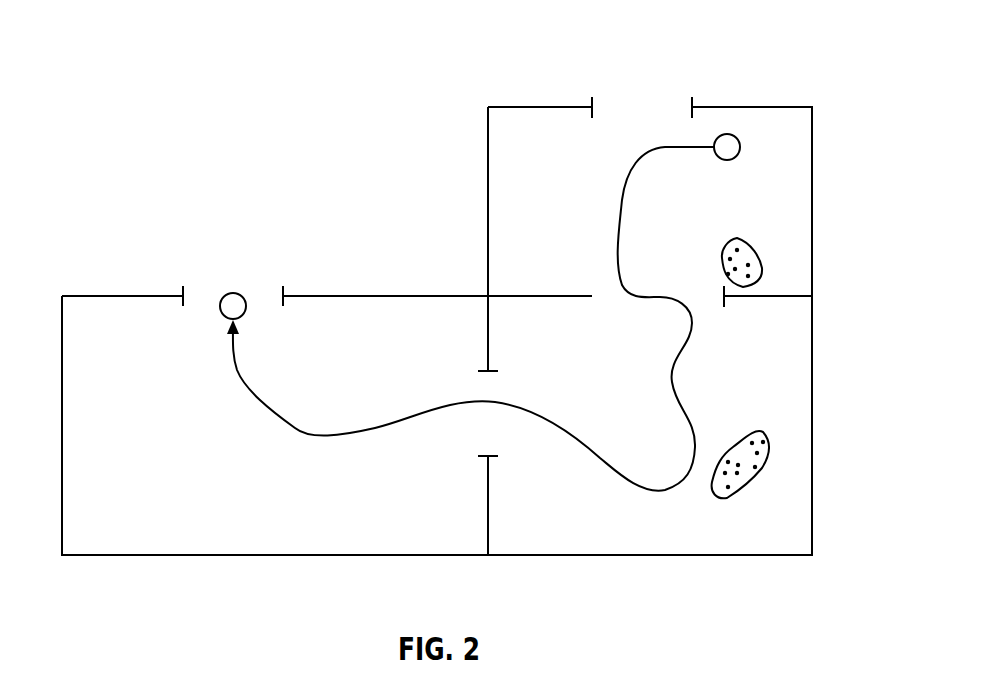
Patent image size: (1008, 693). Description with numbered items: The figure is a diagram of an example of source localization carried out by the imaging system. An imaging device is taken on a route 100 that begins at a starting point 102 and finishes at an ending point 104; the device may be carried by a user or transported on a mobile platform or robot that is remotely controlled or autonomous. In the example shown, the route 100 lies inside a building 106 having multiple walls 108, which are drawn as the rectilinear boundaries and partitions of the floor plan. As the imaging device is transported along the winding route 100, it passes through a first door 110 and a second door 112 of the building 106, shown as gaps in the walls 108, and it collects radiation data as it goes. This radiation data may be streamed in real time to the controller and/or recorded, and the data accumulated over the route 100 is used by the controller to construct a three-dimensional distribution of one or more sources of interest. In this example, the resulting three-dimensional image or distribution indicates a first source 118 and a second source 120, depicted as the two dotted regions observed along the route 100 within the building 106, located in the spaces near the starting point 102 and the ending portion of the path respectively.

The route 100 is at (665, 147).
The starting point 102 is at (727, 134).
The ending point 104 is at (233, 293).
The building 106 is at (112, 296).
The walls 108 is at (488, 210).
The first door 110 is at (597, 293).
The second door 112 is at (489, 444).
The first source 118 is at (755, 228).
The second source 120 is at (757, 503).